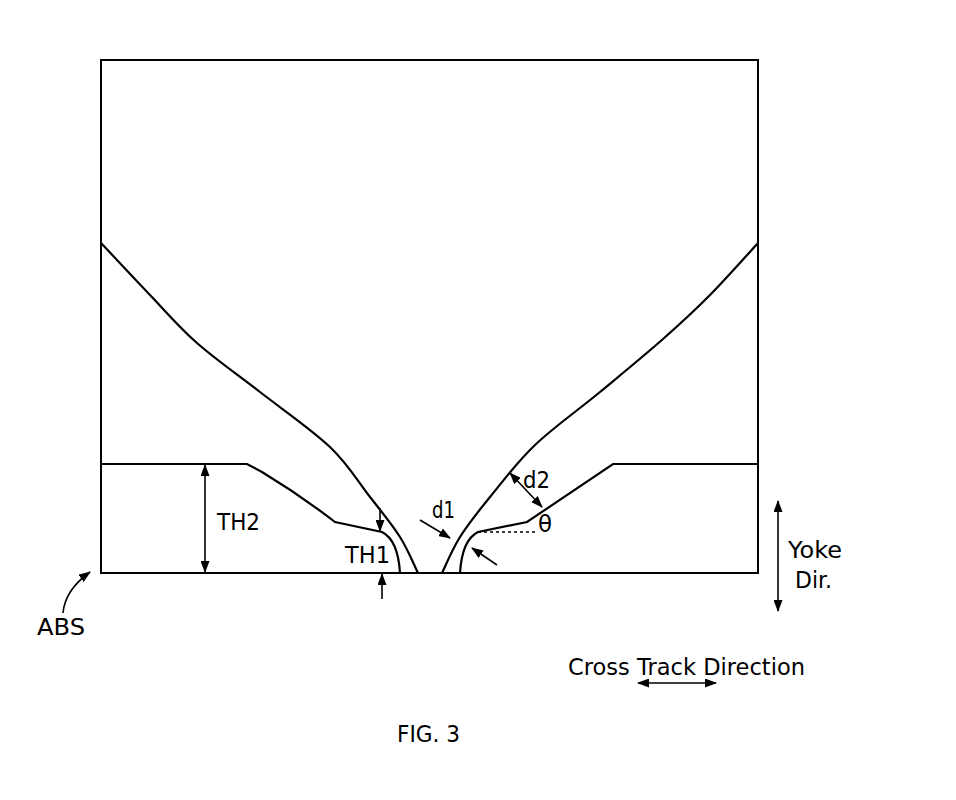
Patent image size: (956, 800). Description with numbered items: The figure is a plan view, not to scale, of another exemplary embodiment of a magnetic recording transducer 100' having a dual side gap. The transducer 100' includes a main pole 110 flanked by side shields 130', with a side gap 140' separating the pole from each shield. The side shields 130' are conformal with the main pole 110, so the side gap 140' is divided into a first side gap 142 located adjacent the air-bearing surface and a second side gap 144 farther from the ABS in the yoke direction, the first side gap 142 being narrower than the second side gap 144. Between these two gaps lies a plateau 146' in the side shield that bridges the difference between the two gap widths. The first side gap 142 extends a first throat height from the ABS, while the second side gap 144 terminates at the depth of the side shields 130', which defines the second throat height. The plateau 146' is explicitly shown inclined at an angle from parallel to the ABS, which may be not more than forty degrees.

The magnetic recording transducer 100' is at (429, 293).
The main pole 110 is at (429, 408).
The side shields 130' is at (429, 518).
The side gap 140' is at (429, 331).
The first side gap 142 is at (413, 577).
The second side gap 144 is at (298, 475).
The plateau 146' is at (425, 574).